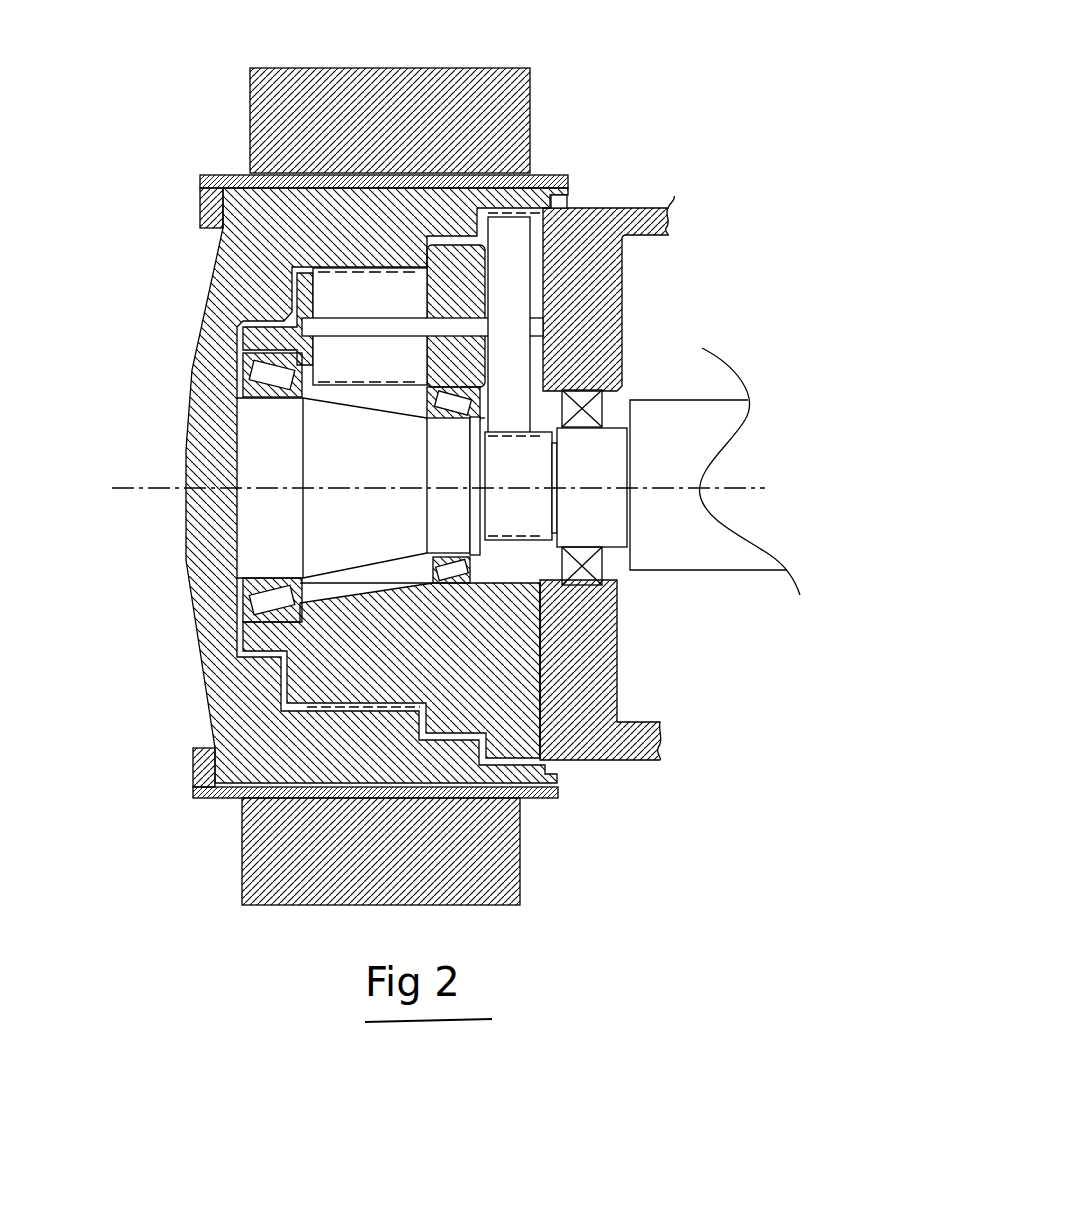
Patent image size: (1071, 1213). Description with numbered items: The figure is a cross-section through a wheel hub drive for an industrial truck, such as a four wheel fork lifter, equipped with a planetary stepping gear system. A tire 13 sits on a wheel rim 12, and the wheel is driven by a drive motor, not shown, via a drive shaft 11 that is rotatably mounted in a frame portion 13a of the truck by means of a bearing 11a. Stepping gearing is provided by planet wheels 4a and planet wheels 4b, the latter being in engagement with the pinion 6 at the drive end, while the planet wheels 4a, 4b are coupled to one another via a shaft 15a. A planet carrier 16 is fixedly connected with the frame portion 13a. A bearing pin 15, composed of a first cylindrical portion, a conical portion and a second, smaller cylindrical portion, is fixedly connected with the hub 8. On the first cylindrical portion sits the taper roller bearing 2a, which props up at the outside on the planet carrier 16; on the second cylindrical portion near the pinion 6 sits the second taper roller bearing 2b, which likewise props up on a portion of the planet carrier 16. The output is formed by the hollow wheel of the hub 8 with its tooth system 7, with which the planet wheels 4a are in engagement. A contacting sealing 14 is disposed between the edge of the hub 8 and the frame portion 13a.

The taper roller bearing 2a is at (272, 602).
The second taper roller bearing 2b is at (452, 573).
The planet wheels 4a is at (350, 275).
The planet wheels 4b is at (513, 392).
The pinion 6 is at (535, 433).
The tooth system 7 is at (350, 708).
The hub 8 is at (208, 440).
The drive shaft 11 is at (730, 425).
The bearing 11a is at (620, 570).
The wheel rim 12 is at (539, 181).
The tire 13 is at (503, 122).
The frame portion 13a is at (627, 280).
The contacting sealing 14 is at (560, 202).
The bearing pin 15 is at (298, 504).
The shaft 15a is at (500, 323).
The planet carrier 16 is at (355, 645).